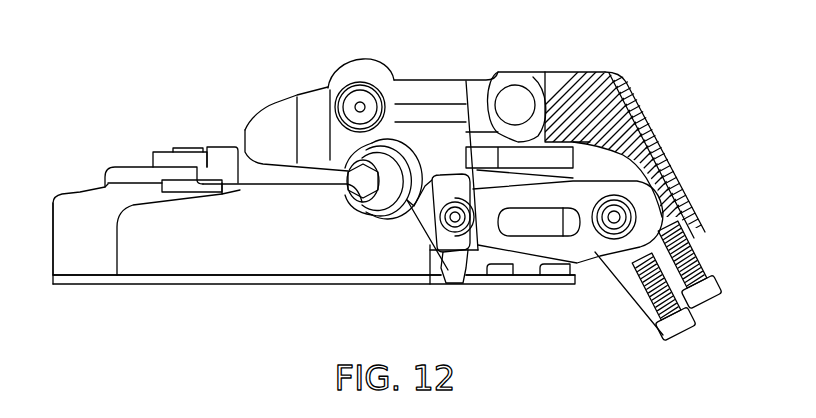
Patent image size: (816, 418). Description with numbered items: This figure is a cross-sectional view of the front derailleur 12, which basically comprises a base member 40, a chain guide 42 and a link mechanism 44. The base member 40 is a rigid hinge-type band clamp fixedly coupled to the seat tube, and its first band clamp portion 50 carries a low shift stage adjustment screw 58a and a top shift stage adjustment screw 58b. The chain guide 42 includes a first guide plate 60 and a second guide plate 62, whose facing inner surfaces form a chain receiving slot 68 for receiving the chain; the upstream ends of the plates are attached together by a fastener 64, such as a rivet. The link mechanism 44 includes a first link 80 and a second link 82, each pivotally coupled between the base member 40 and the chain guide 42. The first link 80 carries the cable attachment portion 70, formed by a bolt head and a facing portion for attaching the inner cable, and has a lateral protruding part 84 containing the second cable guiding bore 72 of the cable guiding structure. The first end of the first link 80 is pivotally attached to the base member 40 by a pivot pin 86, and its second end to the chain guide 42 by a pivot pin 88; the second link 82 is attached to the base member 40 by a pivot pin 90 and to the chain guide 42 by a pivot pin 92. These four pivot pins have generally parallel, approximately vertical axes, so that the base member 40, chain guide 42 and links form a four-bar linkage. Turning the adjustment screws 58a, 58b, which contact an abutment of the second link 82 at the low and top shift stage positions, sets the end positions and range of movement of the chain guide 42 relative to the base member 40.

The front derailleur 12 is at (255, 58).
The base member 40 is at (657, 108).
The chain guide 42 is at (138, 290).
The link mechanism 44 is at (358, 225).
The first band clamp portion 50 is at (573, 70).
The low shift stage adjustment screw 58a is at (724, 298).
The top shift stage adjustment screw 58b is at (693, 336).
The first guide plate 60 is at (228, 285).
The second guide plate 62 is at (132, 163).
The fastener 64 is at (190, 147).
The chain receiving slot 68 is at (154, 239).
The cable attachment portion 70 is at (363, 202).
The second cable guiding bore 72 is at (454, 290).
The first link 80 is at (430, 90).
The second link 82 is at (528, 243).
The lateral protruding part 84 is at (440, 240).
The pivot pin 86 is at (511, 100).
The pivot pin 88 is at (355, 95).
The pivot pin 90 is at (628, 203).
The pivot pin 92 is at (447, 220).